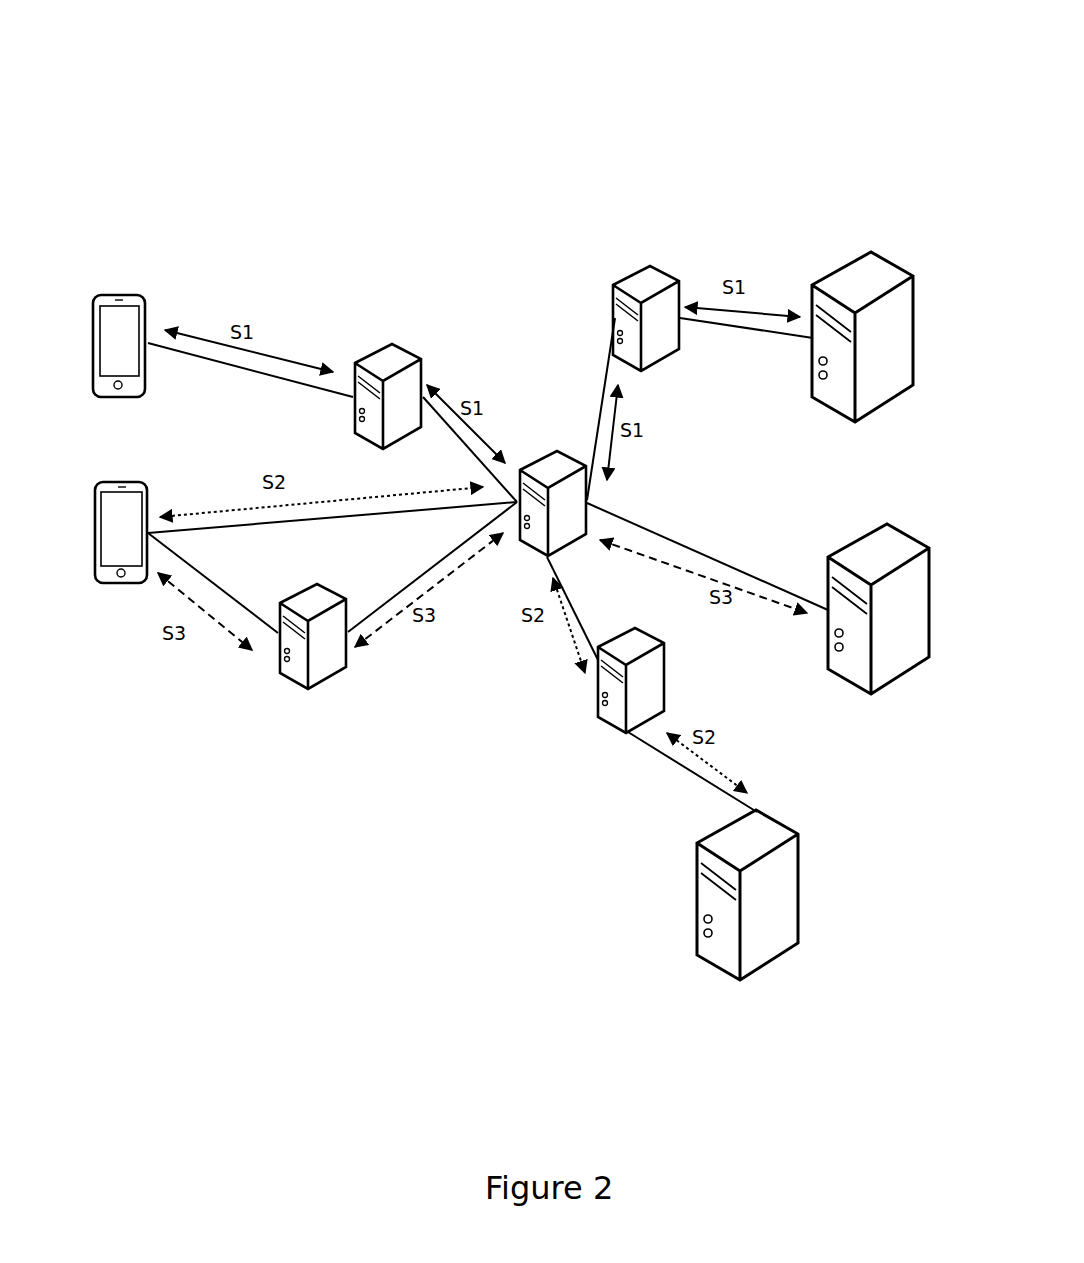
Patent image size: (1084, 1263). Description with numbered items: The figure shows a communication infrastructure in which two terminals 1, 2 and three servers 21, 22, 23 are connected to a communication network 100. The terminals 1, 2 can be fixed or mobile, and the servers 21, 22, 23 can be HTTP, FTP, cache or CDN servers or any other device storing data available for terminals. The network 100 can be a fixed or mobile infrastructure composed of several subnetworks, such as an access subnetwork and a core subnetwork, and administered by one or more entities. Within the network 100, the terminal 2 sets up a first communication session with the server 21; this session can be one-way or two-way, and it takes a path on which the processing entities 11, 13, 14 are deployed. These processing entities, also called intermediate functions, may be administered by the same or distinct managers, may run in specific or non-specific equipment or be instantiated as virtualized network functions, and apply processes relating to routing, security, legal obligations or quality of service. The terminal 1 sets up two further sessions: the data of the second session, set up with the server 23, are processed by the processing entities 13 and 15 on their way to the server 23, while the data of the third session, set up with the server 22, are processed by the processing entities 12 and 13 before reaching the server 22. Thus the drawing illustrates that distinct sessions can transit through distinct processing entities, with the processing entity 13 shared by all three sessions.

The communication network 100 is at (247, 128).
The terminal 1 is at (112, 503).
The terminal 2 is at (115, 316).
The processing entity 11 is at (378, 360).
The processing entity 12 is at (315, 608).
The processing entity 13 is at (553, 465).
The processing entity 14 is at (653, 287).
The processing entity 15 is at (630, 650).
The server 21 is at (863, 289).
The server 22 is at (865, 560).
The server 23 is at (790, 847).